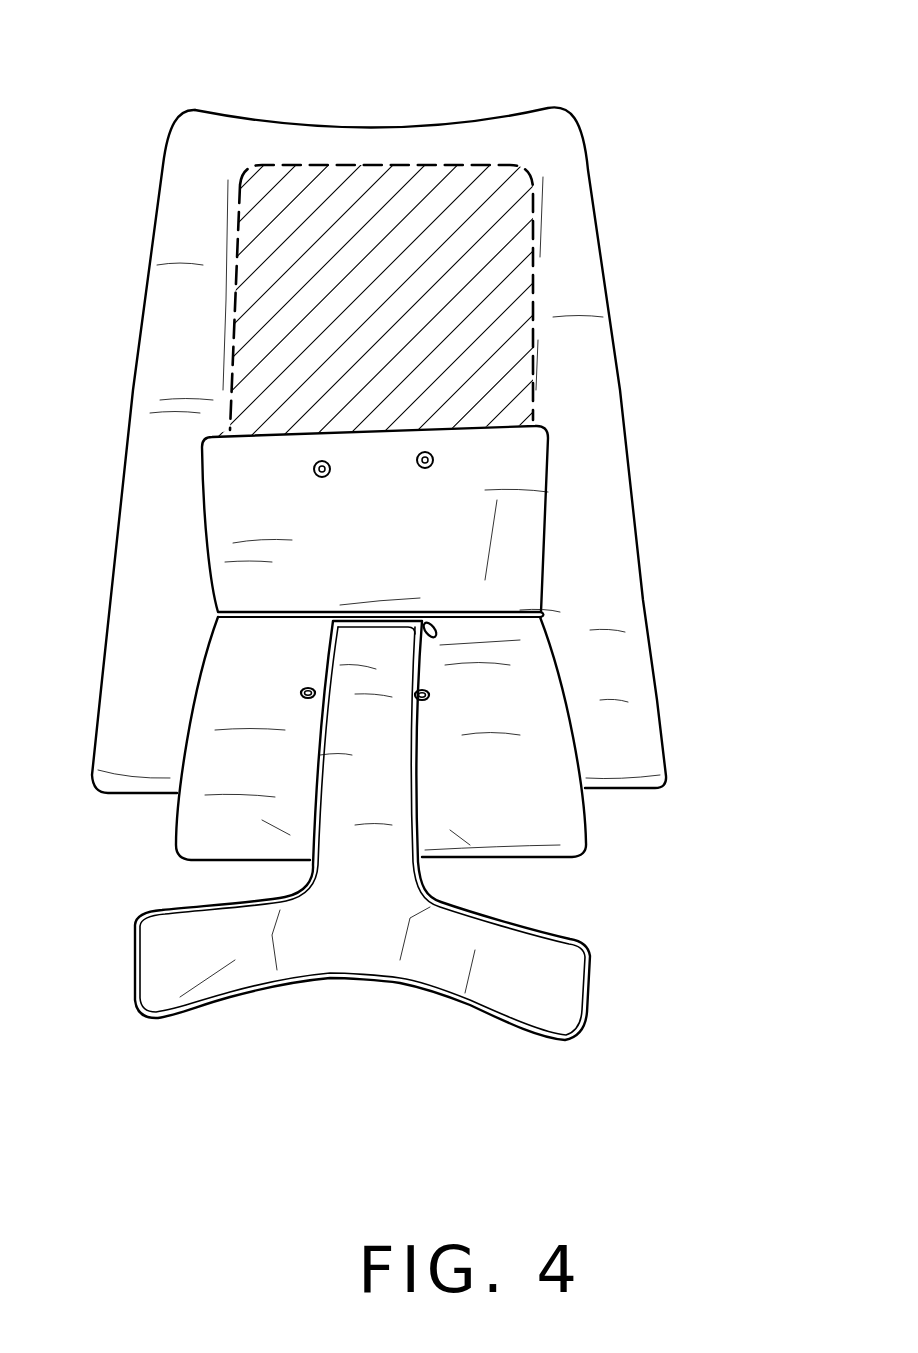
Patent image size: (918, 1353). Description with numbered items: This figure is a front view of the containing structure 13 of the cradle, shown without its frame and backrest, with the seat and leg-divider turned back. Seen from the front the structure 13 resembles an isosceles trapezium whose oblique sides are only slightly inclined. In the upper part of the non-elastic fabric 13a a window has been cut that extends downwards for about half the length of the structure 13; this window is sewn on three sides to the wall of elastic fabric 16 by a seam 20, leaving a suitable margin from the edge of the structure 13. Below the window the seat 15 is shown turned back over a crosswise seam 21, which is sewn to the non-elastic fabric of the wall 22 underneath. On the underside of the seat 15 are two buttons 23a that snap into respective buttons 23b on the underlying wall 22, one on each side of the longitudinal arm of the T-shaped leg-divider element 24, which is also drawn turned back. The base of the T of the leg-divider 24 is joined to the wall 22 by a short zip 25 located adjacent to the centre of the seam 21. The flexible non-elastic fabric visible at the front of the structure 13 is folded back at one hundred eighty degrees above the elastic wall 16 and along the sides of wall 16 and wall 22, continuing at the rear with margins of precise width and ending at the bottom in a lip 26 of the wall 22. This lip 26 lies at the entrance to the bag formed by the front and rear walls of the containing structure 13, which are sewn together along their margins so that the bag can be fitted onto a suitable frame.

The containing structure 13 is at (304, 121).
The non-elastic fabric 13a is at (200, 240).
The wall of elastic fabric 16 is at (405, 285).
The seam 20 is at (360, 165).
The seat 15 is at (428, 542).
The buttons 23a is at (330, 477).
The crosswise seam 21 is at (533, 608).
The wall 22 is at (495, 775).
The lip 26 is at (452, 833).
The buttons 23b is at (302, 692).
The zip 25 is at (430, 623).
The T-shaped leg-divider element 24 is at (357, 883).